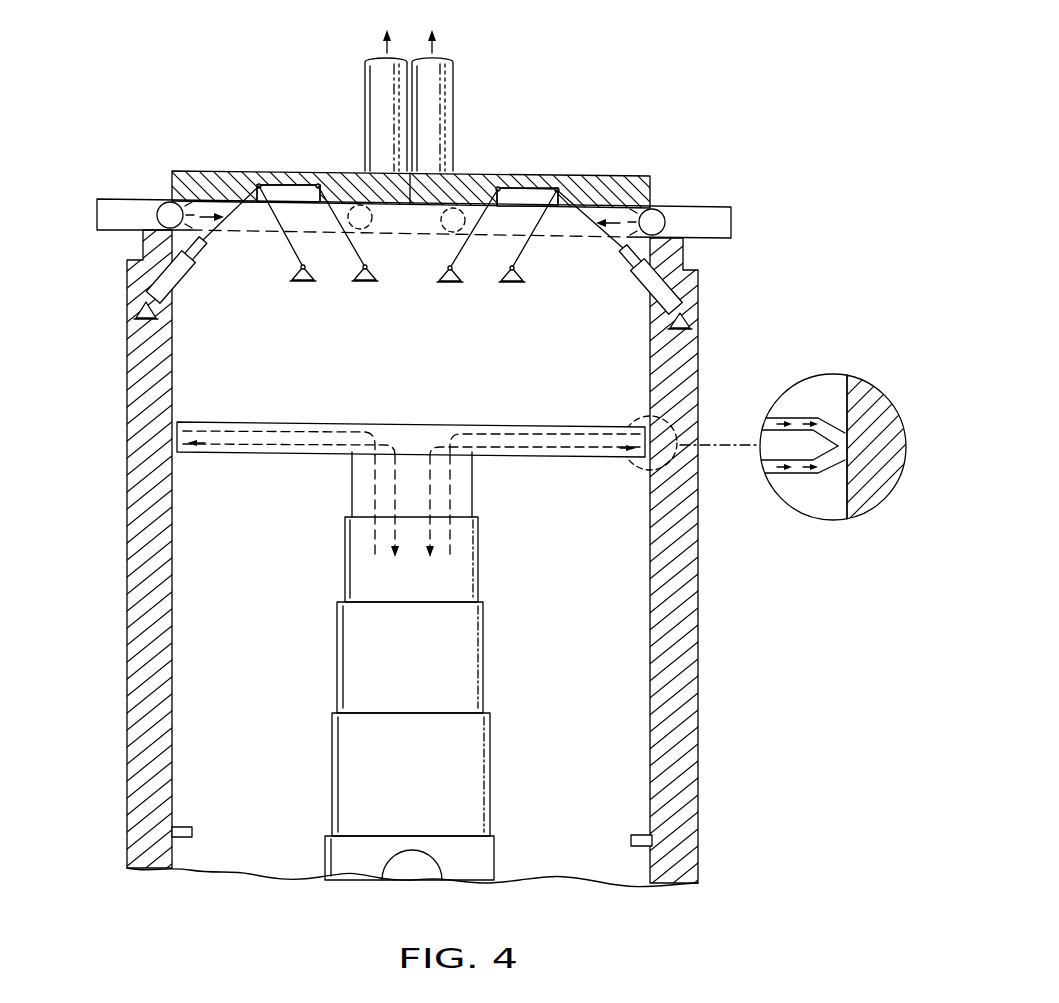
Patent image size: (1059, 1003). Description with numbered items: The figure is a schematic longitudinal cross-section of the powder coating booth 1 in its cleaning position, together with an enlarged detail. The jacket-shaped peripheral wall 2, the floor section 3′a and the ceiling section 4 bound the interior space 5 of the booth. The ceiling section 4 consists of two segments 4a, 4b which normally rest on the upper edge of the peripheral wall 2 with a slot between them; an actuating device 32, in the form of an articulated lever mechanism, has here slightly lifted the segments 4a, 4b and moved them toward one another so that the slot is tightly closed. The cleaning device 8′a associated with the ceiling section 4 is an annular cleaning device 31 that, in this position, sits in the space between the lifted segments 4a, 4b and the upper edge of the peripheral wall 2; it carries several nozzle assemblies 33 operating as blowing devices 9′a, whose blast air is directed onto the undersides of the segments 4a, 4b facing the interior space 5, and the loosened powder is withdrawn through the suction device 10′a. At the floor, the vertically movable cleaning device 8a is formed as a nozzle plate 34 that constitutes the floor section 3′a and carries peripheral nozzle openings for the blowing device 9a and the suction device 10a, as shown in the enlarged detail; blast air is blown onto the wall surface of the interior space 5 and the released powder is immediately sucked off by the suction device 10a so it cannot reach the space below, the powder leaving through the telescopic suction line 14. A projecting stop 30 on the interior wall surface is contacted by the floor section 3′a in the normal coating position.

The coating booth 1 is at (803, 200).
The peripheral wall 2 is at (680, 597).
The floor section 3′a is at (240, 452).
The ceiling section 4 is at (411, 133).
The segment 4a is at (587, 187).
The segment 4b is at (242, 186).
The interior space 5 is at (563, 667).
The cleaning device 8a is at (220, 410).
The cleaning device 8′a is at (568, 86).
The blowing device 9a is at (797, 477).
The blowing devices 9′a is at (697, 216).
The suction device 10a is at (790, 418).
The suction device 10′a is at (376, 90).
The suction line 14 is at (448, 770).
The stop 30 is at (640, 836).
The annular cleaning device 31 is at (668, 196).
The actuating device 32 is at (195, 275).
The nozzle assemblies 33 is at (162, 207).
The nozzle plate 34 is at (291, 462).